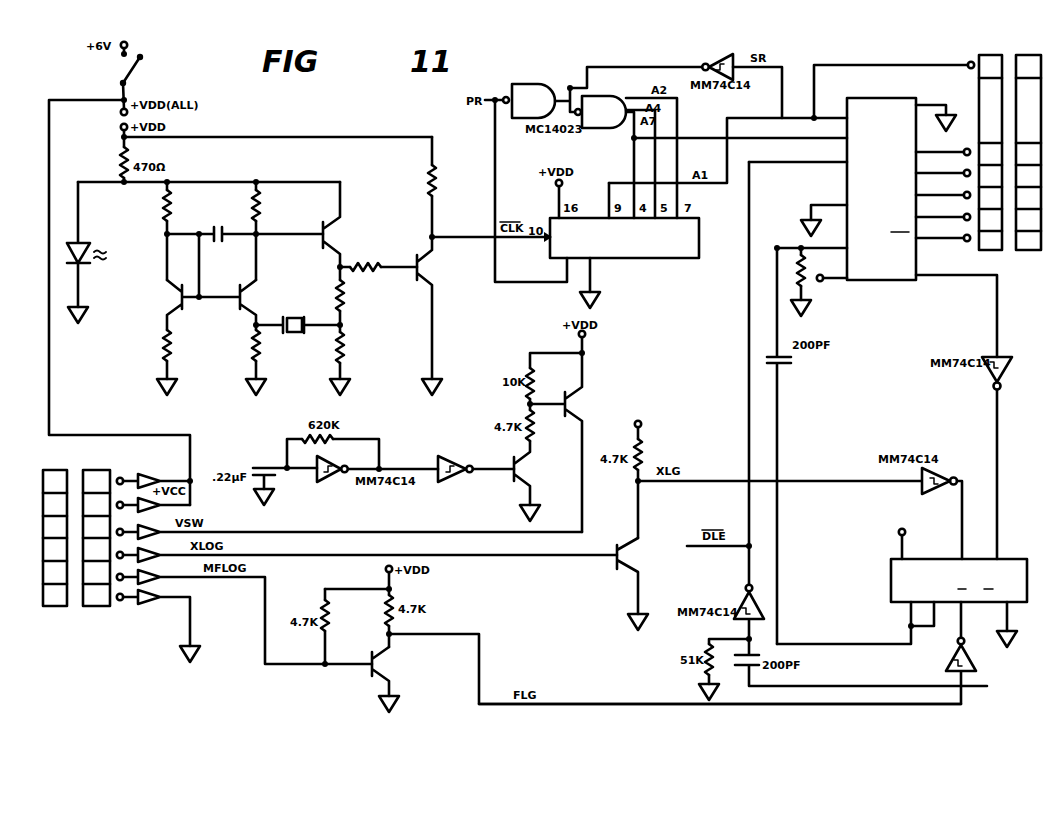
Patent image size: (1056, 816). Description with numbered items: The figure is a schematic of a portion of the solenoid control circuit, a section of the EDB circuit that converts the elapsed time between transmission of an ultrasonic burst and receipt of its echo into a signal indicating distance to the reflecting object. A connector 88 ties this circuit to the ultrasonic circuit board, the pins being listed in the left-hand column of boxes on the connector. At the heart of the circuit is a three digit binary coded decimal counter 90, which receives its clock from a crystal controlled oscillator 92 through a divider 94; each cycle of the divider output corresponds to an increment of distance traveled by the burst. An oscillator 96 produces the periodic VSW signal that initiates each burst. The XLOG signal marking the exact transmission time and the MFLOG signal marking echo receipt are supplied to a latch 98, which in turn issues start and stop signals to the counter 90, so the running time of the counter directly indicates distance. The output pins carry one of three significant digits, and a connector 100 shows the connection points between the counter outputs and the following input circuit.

The connector 88 is at (112, 610).
The three digit binary coded decimal counter 90 is at (895, 281).
The crystal controlled oscillator 92 is at (305, 274).
The divider 94 is at (655, 260).
The oscillator 96 is at (456, 453).
The latch 98 is at (891, 603).
The connector 100 is at (1045, 254).